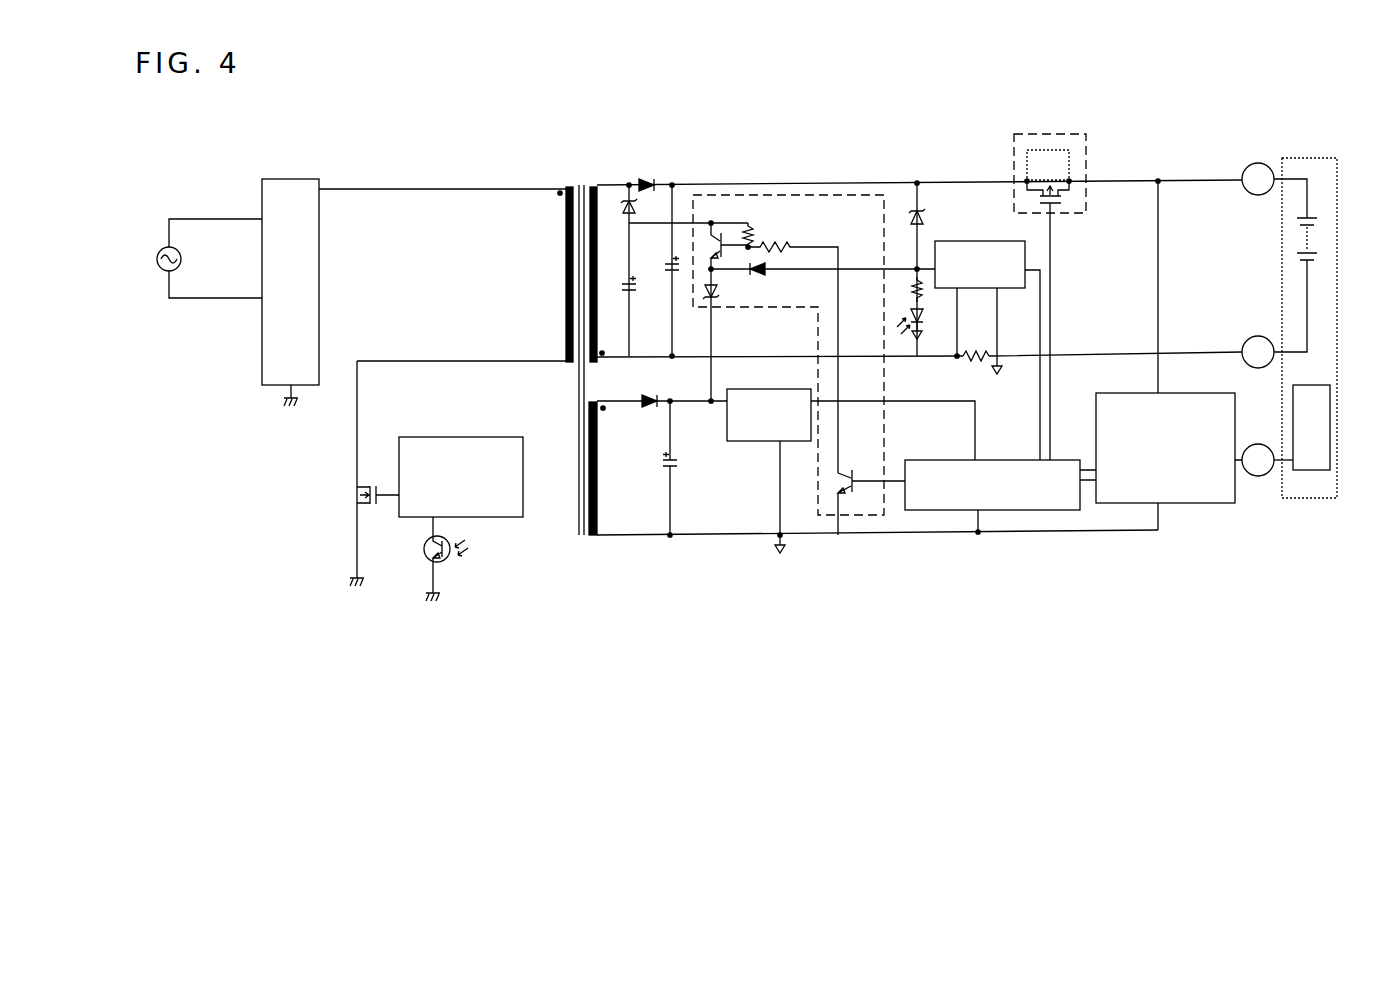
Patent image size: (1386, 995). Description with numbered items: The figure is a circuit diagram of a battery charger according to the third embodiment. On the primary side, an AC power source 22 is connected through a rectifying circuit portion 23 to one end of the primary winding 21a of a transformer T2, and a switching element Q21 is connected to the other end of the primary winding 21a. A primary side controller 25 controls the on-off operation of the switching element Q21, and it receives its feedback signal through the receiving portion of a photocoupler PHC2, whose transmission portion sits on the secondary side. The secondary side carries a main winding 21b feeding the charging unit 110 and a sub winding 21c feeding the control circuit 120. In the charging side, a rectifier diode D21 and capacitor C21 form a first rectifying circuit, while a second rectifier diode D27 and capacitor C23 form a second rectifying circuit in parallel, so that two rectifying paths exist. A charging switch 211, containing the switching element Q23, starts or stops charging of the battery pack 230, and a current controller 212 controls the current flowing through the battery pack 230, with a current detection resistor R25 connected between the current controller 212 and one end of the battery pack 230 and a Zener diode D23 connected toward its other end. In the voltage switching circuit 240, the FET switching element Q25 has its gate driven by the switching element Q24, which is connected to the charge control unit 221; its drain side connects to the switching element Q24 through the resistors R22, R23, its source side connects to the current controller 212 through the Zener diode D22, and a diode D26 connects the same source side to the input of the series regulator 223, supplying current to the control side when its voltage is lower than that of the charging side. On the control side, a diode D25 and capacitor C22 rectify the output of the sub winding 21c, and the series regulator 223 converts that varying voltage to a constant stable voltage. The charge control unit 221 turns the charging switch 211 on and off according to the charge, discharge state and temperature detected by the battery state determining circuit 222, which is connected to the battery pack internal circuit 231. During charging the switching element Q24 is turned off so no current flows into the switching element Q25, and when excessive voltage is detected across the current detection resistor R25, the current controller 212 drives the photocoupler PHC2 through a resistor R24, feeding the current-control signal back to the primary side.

The AC power source 22 is at (161, 250).
The rectifying circuit portion 23 is at (299, 178).
The primary side controller 25 is at (440, 437).
The charging unit 110 is at (752, 118).
The control circuit 120 is at (750, 575).
The transformer T2 is at (582, 186).
The primary winding 21a is at (566, 262).
The main winding 21b is at (604, 190).
The sub winding 21c is at (598, 498).
The switching element Q21 is at (303, 483).
The switching element Q23 is at (1048, 305).
The switching element Q24 is at (871, 491).
The switching element Q25 is at (723, 301).
The diode D21 is at (656, 174).
The Zener diode D22 is at (823, 278).
The Zener diode D23 is at (936, 219).
The diode D25 is at (648, 389).
The diode D26 is at (729, 292).
The second rectifier diode D27 is at (646, 209).
The capacitor C21 is at (656, 258).
The capacitor C22 is at (690, 468).
The capacitor C23 is at (643, 296).
The resistor R22 is at (763, 224).
The resistor R23 is at (793, 348).
The resistor R24 is at (895, 289).
The current detection resistor R25 is at (966, 365).
The photocoupler PHC2 is at (680, 455).
The charging switch 211 is at (1078, 265).
The current controller 212 is at (972, 241).
The charge control unit 221 is at (1050, 461).
The battery state determining circuit 222 is at (1203, 394).
The series regulator 223 is at (758, 389).
The battery pack 230 is at (1306, 357).
The battery pack internal circuit 231 is at (1308, 498).
The voltage switching circuit 240 is at (812, 193).